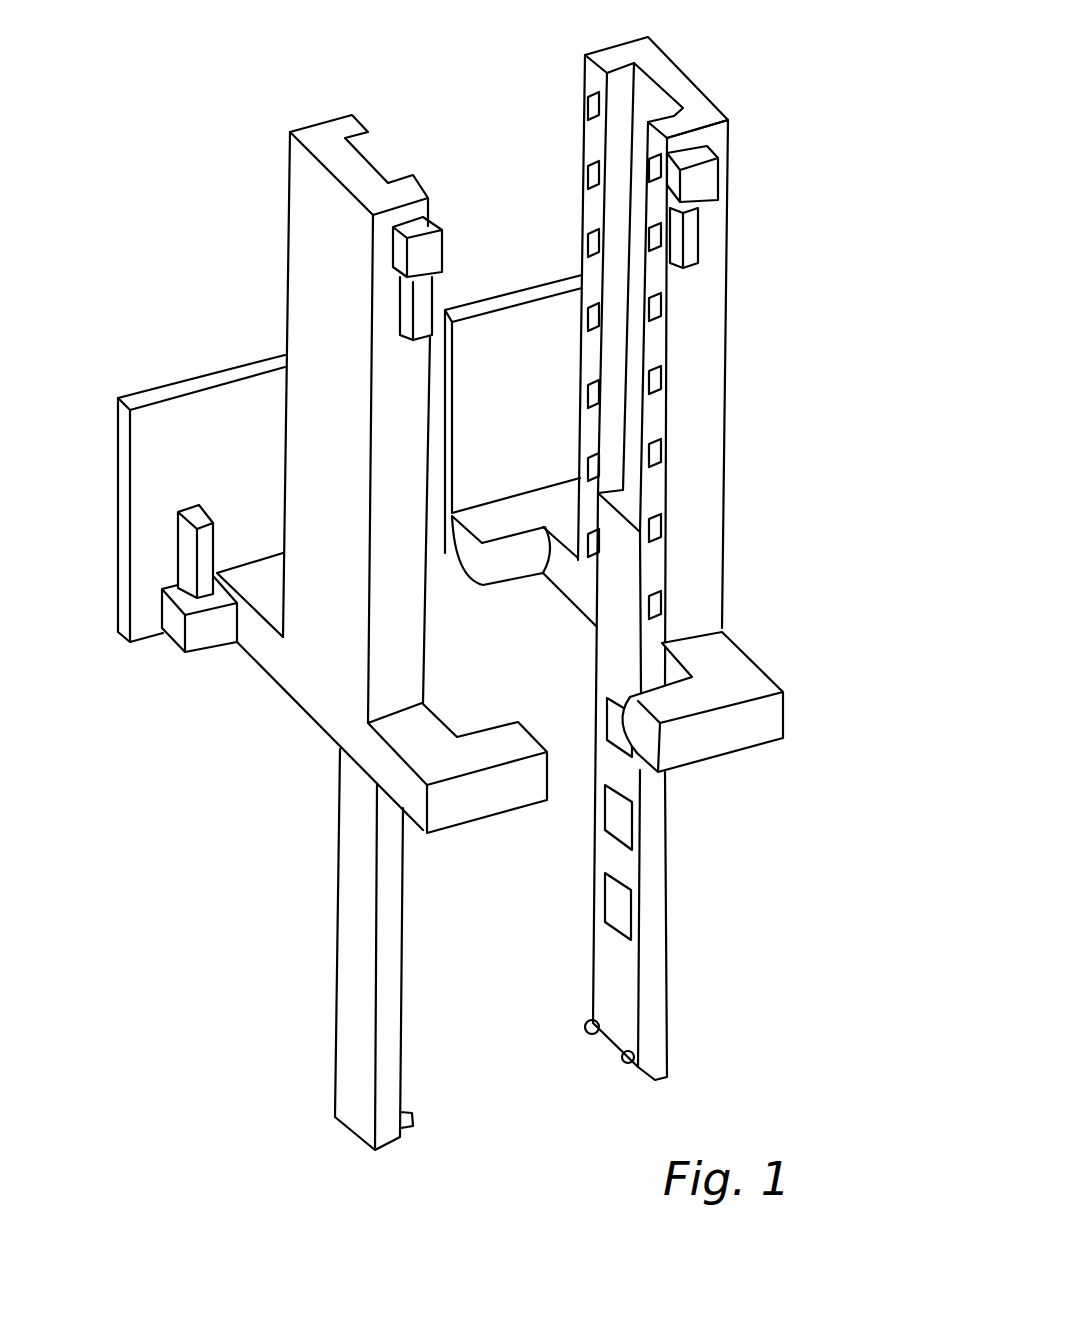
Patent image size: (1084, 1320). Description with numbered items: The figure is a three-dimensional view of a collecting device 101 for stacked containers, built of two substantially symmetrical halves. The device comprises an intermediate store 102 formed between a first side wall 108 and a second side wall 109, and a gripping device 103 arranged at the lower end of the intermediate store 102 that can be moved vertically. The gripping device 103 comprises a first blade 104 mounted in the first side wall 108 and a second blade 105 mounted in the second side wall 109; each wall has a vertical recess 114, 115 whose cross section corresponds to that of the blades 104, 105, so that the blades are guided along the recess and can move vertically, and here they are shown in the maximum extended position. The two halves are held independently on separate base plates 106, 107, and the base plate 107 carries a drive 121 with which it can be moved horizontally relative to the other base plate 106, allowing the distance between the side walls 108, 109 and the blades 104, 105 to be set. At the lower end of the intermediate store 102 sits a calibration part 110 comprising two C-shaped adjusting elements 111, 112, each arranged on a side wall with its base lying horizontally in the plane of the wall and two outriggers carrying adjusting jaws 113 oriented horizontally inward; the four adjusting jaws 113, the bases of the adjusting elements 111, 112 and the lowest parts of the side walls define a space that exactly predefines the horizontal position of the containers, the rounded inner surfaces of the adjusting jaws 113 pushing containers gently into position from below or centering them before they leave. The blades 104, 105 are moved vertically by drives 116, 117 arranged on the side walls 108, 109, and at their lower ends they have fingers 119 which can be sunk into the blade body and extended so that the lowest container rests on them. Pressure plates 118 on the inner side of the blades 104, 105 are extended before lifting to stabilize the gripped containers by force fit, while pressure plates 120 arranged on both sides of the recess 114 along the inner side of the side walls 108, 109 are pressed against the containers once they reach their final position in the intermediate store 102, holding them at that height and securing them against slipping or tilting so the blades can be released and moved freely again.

The collecting device 101 is at (214, 104).
The intermediate store 102 is at (760, 410).
The gripping device 103 is at (697, 931).
The first blade 104 is at (652, 1033).
The second blade 105 is at (353, 1082).
The base plate 106 is at (518, 331).
The base plate 107 is at (211, 426).
The first side wall 108 is at (700, 506).
The second side wall 109 is at (328, 663).
The calibration part 110 is at (826, 674).
The C-shaped adjusting element 111 is at (710, 745).
The C-shaped adjusting element 112 is at (470, 813).
The adjusting jaws 113 is at (517, 562).
The vertical recess 114 is at (652, 90).
The vertical recess 115 is at (377, 163).
The drive 116 is at (705, 181).
The drive 117 is at (393, 254).
The pressure plates 118 is at (630, 828).
The fingers 119 is at (588, 1030).
The pressure plates 120 is at (587, 105).
The drive 121 is at (201, 640).